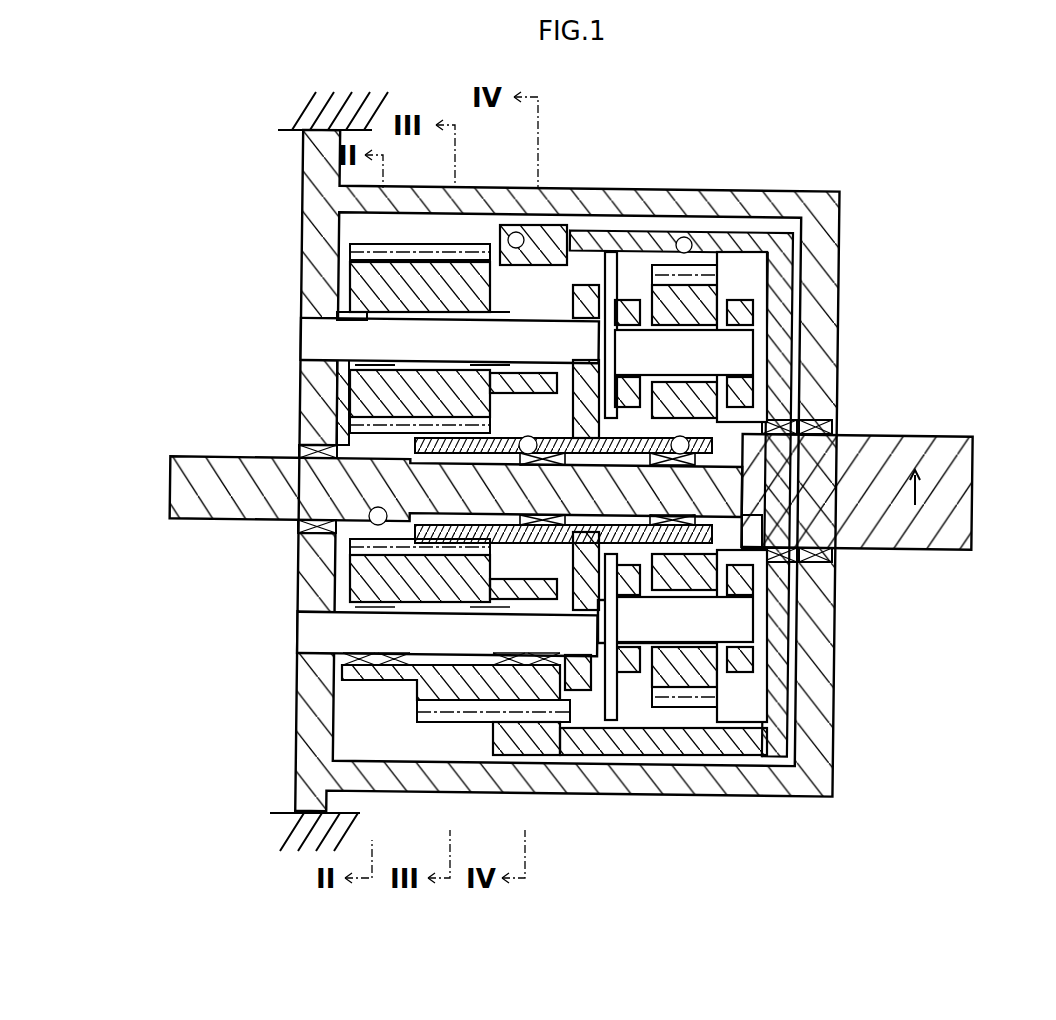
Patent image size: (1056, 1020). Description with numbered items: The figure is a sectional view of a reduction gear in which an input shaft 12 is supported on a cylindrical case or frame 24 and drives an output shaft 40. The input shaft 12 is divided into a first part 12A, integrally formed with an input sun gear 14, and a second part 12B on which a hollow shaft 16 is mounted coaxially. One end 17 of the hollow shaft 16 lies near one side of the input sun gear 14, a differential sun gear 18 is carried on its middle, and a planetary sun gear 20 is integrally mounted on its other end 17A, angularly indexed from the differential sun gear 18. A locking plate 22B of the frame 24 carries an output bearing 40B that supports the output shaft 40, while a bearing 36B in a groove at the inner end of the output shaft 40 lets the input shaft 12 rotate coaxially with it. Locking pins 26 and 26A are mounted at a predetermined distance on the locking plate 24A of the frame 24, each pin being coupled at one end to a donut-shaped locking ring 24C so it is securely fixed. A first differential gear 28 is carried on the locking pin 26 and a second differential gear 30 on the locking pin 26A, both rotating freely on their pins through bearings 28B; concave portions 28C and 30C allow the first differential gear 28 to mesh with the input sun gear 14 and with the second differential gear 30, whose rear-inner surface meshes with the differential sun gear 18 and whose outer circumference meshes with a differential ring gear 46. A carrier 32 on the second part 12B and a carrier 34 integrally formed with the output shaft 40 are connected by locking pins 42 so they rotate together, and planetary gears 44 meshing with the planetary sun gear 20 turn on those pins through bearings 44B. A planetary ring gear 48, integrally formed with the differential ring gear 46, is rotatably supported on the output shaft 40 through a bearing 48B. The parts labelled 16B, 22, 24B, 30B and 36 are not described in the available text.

The input shaft 12 is at (170, 485).
The first part of the input shaft 12A is at (355, 489).
The second part of the input shaft 12B is at (576, 490).
The input sun gear 14 is at (355, 440).
The hollow shaft 16 is at (590, 285).
The ring gear hub 16B is at (796, 457).
The one end of the hollow shaft 17 is at (608, 438).
The other end of the hollow shaft 17A is at (834, 434).
The differential sun gear 18 is at (528, 436).
The planetary sun gear 20 is at (760, 395).
The housing 22 is at (301, 150).
The locking plate 22B is at (298, 526).
The case or frame 24 is at (665, 195).
The locking plate 24A is at (338, 372).
The rotor wall 24B is at (820, 708).
The locking ring 24C is at (592, 758).
The locking pin 26 is at (300, 340).
The locking pin 26A is at (298, 635).
The first differential gear 28 is at (350, 282).
The bearing 28B is at (338, 314).
The concave portion 28C is at (553, 258).
The second differential gear 30 is at (442, 692).
The bearing 30B is at (342, 680).
The concave portion 30C is at (373, 680).
The carrier 32 is at (620, 690).
The carrier 34 is at (735, 690).
The sleeve 36 is at (752, 555).
The bearing 36B is at (790, 545).
The output shaft 40 is at (960, 517).
The output bearing 40B is at (780, 540).
The locking pin 42 is at (750, 630).
The planetary gear 44 is at (720, 275).
The bearing 44B is at (720, 295).
The differential ring gear 46 is at (522, 755).
The planetary ring gear 48 is at (742, 255).
The bearing 48B is at (740, 420).